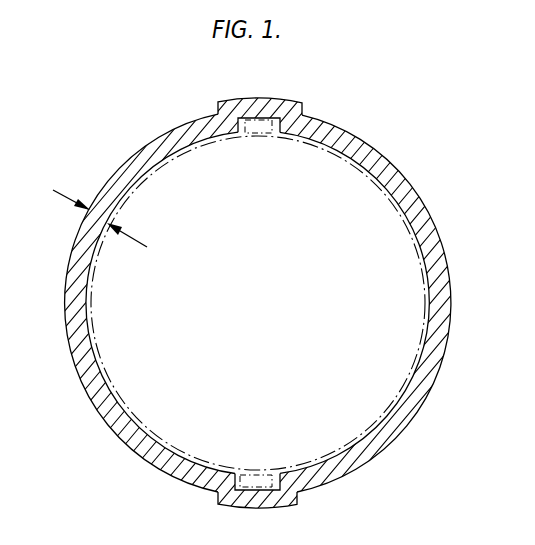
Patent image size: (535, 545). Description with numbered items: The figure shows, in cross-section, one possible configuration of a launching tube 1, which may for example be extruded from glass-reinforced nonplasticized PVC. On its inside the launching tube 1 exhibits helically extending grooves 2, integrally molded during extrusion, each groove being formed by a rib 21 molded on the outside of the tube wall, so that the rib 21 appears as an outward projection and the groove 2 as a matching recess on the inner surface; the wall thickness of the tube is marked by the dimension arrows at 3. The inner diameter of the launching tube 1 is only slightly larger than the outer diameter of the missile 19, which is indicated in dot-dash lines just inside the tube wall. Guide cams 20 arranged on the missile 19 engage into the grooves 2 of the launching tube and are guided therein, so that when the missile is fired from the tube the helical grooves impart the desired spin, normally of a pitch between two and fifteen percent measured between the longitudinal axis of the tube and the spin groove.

The launching tube 1 is at (438, 343).
The helically extending grooves 2 is at (296, 495).
The wall thickness 3 is at (92, 222).
The missile 19 is at (415, 223).
The guide cams 20 is at (292, 123).
The rib 21 is at (302, 100).